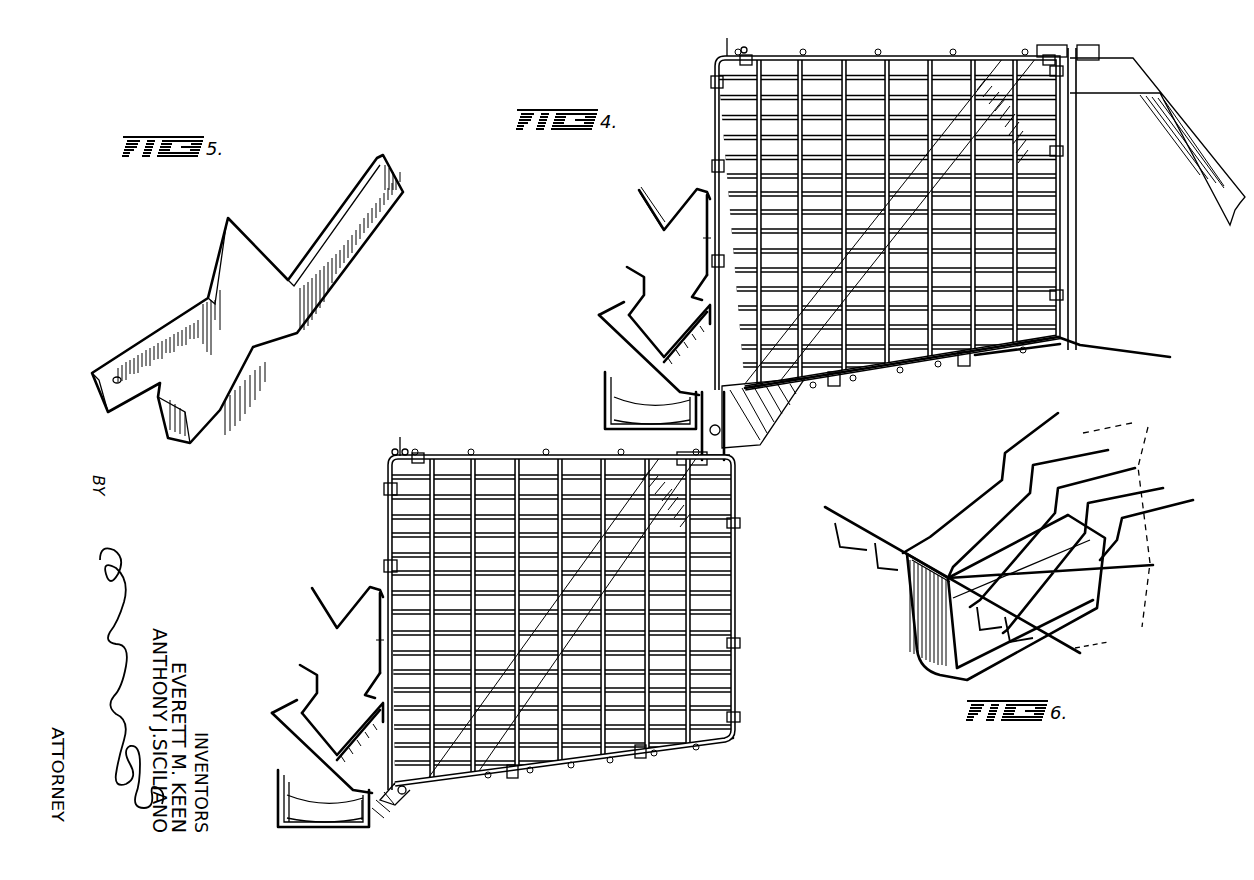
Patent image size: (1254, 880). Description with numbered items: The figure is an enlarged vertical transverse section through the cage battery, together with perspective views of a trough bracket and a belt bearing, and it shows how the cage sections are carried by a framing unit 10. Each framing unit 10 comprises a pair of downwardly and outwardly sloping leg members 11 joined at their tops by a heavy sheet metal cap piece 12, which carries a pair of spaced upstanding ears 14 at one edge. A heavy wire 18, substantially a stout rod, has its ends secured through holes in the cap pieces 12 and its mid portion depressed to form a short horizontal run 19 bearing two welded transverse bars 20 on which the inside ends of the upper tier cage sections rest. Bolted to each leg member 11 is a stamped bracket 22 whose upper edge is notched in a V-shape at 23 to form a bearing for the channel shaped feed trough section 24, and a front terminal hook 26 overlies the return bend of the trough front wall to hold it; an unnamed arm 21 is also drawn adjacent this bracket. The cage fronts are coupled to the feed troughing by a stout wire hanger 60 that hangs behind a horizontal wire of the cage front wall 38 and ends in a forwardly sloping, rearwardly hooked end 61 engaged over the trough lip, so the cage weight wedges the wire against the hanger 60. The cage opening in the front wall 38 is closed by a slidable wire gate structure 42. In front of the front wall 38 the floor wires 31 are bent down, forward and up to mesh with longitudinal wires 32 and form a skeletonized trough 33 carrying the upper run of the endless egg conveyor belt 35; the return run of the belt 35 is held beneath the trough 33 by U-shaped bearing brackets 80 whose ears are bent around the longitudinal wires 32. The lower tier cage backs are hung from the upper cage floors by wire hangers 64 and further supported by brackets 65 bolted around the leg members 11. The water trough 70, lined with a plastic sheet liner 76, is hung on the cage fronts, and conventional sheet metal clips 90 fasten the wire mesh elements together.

In FIG. 4, the framing unit 10 is at (1187, 204).
In FIG. 4, the leg member 11 is at (1159, 156).
In FIG. 4, the cap piece 12 is at (1126, 72).
In FIG. 4, the upstanding ears 14 is at (1100, 53).
In FIG. 4, the heavy wire 18 is at (1076, 191).
In FIG. 4, the horizontal run 19 is at (1078, 355).
In FIG. 4, the transverse bars 20 is at (1014, 357).
In FIG. 4, the hook arm 21 is at (624, 289).
In FIG. 4, the bracket 22 is at (614, 346).
In FIG. 5, the bracket 22 is at (296, 185).
In FIG. 5, the V-shaped notch 23 is at (325, 231).
In FIG. 4, the feed trough section 24 is at (645, 330).
In FIG. 4, the front terminal hook 26 is at (600, 310).
In FIG. 5, the front terminal hook 26 is at (380, 163).
In FIG. 4, the rear to front wires 31 is at (874, 367).
In FIG. 6, the rear to front wires 31 is at (1014, 521).
In FIG. 6, the longitudinal wires 32 is at (979, 580).
In FIG. 4, the skeletonized trough 33 is at (586, 394).
In FIG. 6, the skeletonized trough 33 is at (948, 502).
In FIG. 4, the endless belt conveyor 35 is at (636, 396).
In FIG. 4, the cage front wall 38 is at (707, 150).
In FIG. 4, the gate structure 42 is at (384, 446).
In FIG. 4, the wire hanger 60 is at (707, 253).
In FIG. 4, the hooked end 61 is at (690, 293).
In FIG. 4, the wire hanger 64 is at (740, 428).
In FIG. 4, the bracket 65 is at (678, 446).
In FIG. 4, the water trough 70 is at (633, 211).
In FIG. 4, the plastic sheet liner 76 is at (648, 196).
In FIG. 4, the bearing bracket 80 is at (278, 807).
In FIG. 6, the bearing bracket 80 is at (924, 626).
In FIG. 4, the sheet metal clips 90 is at (753, 56).